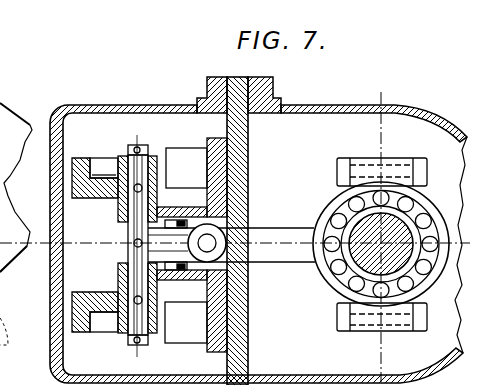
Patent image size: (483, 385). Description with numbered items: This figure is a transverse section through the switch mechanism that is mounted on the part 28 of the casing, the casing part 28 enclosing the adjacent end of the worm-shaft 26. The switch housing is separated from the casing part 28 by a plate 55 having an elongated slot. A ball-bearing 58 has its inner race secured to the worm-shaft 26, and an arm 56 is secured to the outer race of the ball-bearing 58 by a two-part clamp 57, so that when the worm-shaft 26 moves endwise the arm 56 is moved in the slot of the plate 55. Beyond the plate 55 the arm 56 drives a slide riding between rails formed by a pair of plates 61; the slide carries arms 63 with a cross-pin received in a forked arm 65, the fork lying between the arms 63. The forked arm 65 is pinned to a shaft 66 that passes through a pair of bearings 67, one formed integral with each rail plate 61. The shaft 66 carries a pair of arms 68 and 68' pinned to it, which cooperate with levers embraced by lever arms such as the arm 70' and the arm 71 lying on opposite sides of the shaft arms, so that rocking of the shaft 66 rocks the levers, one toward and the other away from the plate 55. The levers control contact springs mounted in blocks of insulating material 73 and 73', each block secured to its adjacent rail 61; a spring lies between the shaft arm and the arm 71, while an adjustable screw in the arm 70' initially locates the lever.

The part of the casing 28 is at (318, 110).
The plate 55 is at (250, 341).
The rail plate 61 is at (214, 139).
The arm 63 is at (171, 221).
The block of insulating material 73' is at (186, 160).
The block of insulating material 73 is at (182, 335).
The bearing 67 is at (118, 211).
The forked arm 65 is at (130, 243).
The shaft 66 is at (141, 147).
The arm 71 is at (102, 319).
The arm 68' is at (69, 178).
The arm 70' is at (104, 150).
The arm 68 is at (69, 312).
The arm 56 is at (277, 257).
The two-part clamp 57 is at (333, 287).
The ball-bearing 58 is at (425, 272).
The worm-shaft 26 is at (400, 220).